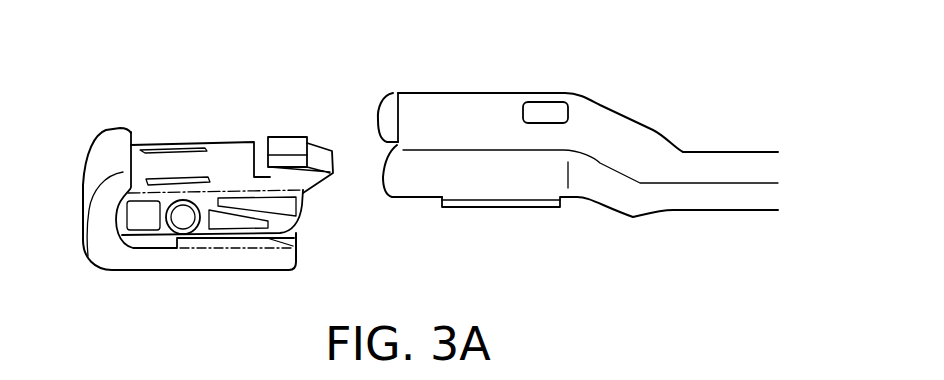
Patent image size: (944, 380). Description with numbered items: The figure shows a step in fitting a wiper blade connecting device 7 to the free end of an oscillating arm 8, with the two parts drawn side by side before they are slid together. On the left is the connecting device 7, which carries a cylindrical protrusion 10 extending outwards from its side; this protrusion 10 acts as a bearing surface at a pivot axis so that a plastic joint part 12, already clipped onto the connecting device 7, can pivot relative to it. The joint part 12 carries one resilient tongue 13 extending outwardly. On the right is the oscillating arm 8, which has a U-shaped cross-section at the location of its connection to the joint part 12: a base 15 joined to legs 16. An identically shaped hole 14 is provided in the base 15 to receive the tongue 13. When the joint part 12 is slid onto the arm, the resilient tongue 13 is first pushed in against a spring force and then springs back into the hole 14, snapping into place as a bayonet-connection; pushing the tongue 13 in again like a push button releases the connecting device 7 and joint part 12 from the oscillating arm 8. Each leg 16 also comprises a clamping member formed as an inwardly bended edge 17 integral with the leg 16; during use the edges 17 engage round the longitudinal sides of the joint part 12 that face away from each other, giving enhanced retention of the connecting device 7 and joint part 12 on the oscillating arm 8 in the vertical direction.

The connecting device 7 is at (90, 130).
The oscillating arm 8 is at (590, 82).
The cylindrical protrusion 10 is at (183, 218).
The joint part 12 is at (188, 137).
The resilient tongue 13 is at (288, 147).
The hole 14 is at (550, 112).
The base 15 is at (460, 110).
The leg 16 is at (385, 118).
The inwardly bended edge 17 is at (523, 208).